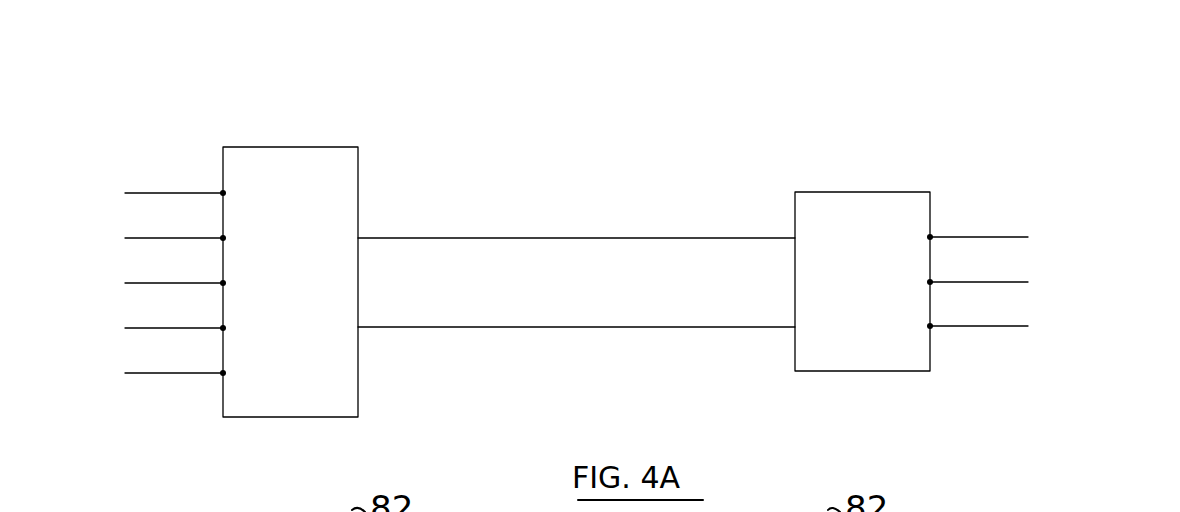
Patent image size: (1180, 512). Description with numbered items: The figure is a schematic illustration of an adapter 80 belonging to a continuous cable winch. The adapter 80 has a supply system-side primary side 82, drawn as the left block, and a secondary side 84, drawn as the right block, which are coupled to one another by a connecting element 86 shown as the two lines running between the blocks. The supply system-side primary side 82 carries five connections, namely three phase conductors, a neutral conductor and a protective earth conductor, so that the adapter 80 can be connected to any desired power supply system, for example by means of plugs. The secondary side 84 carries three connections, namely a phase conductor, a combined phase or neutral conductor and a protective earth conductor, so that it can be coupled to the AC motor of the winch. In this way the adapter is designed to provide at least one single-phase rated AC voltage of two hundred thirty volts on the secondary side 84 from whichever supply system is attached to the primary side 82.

The adapter 80 is at (984, 156).
The supply system-side primary side 82 is at (286, 189).
The secondary side 84 is at (858, 216).
The connecting element 86 is at (606, 266).